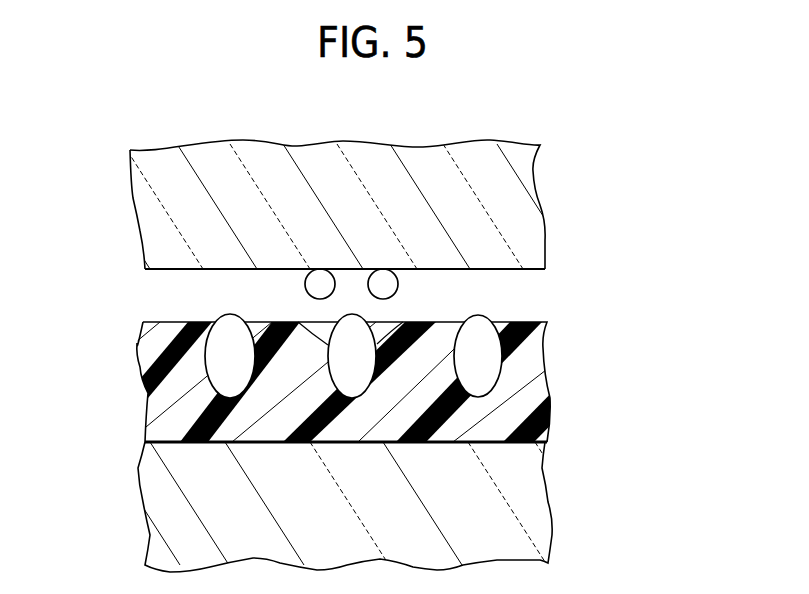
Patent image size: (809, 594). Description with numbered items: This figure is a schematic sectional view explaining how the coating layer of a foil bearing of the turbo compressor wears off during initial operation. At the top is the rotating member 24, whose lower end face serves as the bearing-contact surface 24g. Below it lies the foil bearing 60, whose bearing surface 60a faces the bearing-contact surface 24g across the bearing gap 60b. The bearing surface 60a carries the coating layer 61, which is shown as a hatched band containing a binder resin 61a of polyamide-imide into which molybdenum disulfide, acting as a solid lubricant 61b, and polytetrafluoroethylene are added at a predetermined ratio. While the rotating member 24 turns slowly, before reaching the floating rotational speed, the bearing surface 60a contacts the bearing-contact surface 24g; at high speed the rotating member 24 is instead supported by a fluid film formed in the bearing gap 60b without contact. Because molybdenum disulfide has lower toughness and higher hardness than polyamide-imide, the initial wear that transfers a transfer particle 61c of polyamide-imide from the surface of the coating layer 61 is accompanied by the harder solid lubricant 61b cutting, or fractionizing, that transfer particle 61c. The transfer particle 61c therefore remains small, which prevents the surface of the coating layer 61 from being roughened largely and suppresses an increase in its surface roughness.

The rotating member 24 is at (508, 223).
The bearing-contact surface 24g is at (500, 270).
The coating layer 61 is at (347, 369).
The binder resin 61a is at (167, 408).
The solid lubricant 61b is at (233, 332).
The transfer particle 61c is at (307, 285).
The bearing gap 60b is at (150, 277).
The bearing surface 60a is at (457, 445).
The foil bearing 60 is at (533, 498).